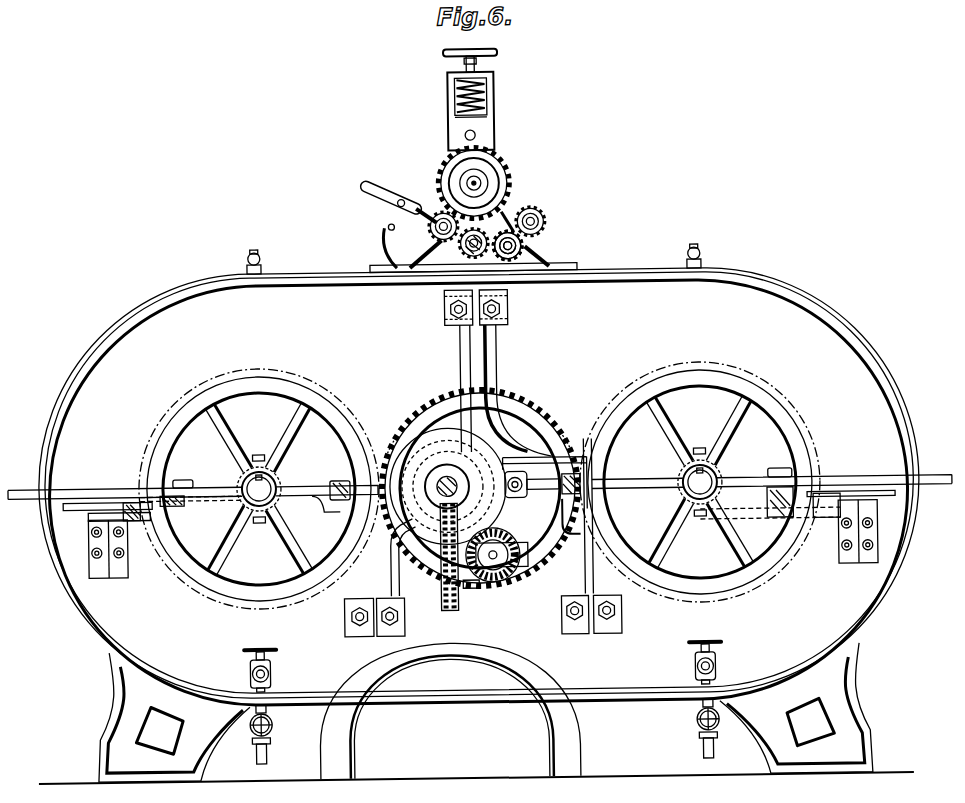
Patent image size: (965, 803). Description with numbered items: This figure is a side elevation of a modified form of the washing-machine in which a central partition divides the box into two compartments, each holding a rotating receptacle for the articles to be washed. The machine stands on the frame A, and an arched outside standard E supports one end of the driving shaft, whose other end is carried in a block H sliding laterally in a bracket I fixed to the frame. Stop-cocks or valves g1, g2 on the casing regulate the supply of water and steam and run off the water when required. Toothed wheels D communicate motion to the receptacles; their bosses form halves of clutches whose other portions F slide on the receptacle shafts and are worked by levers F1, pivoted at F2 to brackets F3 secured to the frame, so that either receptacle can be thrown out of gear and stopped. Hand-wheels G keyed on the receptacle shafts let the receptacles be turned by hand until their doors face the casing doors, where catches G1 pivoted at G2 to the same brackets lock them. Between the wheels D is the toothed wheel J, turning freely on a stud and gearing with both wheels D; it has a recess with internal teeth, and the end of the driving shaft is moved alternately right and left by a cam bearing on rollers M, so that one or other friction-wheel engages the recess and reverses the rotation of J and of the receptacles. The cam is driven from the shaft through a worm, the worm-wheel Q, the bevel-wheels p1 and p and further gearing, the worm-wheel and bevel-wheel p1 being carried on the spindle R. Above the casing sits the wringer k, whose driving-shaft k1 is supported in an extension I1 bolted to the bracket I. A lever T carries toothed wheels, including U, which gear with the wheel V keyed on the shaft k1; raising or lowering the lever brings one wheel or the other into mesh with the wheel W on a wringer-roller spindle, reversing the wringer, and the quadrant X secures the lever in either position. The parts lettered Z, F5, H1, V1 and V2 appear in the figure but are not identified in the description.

The frame A is at (485, 713).
The outside bearing or standard E is at (450, 711).
The hand-wheel G is at (228, 596).
The stop-cock or valve g1 is at (268, 671).
The stop-cock or valve g2 is at (269, 735).
The clutch portion F is at (280, 478).
The lever F1 is at (90, 484).
The pivot F2 is at (183, 476).
The bracket F3 is at (150, 530).
The clamp block F5 is at (808, 530).
The catch G1 is at (88, 512).
The pivot G2 is at (131, 498).
The roller M is at (352, 480).
The toothed wheel J is at (552, 384).
The toothed wheel D is at (385, 445).
The hub Z is at (458, 470).
The bracket I is at (390, 578).
The extension I1 is at (498, 352).
The block H is at (520, 498).
The bracket arm H1 is at (572, 530).
The spindle R is at (502, 554).
The miter-wheel or bevel-wheel p is at (492, 582).
The miter-wheel or bevel-wheel p1 is at (470, 588).
The worm-wheel Q is at (448, 610).
The wringer k is at (499, 130).
The driving-shaft k1 is at (462, 252).
The toothed wheel W is at (512, 162).
The lever T is at (428, 196).
The quadrant X is at (392, 227).
The toothed wheel U is at (435, 235).
The toothed wheel V is at (511, 231).
The gear V1 is at (526, 246).
The gear V2 is at (549, 220).